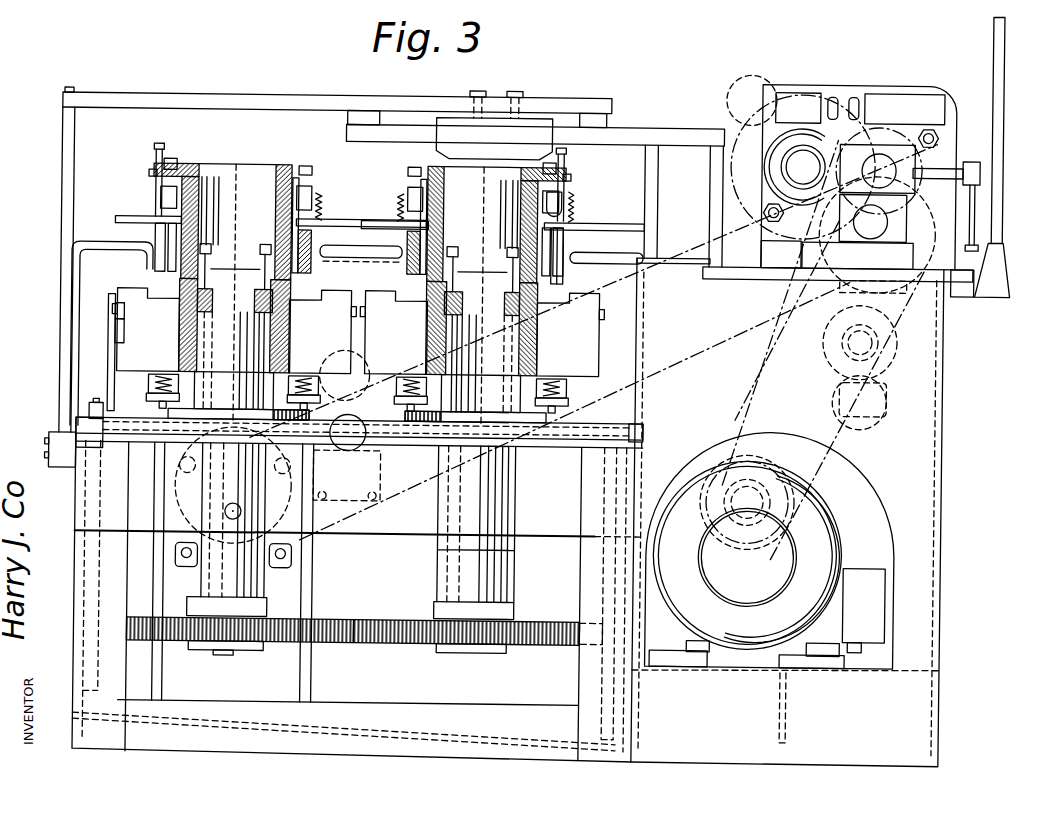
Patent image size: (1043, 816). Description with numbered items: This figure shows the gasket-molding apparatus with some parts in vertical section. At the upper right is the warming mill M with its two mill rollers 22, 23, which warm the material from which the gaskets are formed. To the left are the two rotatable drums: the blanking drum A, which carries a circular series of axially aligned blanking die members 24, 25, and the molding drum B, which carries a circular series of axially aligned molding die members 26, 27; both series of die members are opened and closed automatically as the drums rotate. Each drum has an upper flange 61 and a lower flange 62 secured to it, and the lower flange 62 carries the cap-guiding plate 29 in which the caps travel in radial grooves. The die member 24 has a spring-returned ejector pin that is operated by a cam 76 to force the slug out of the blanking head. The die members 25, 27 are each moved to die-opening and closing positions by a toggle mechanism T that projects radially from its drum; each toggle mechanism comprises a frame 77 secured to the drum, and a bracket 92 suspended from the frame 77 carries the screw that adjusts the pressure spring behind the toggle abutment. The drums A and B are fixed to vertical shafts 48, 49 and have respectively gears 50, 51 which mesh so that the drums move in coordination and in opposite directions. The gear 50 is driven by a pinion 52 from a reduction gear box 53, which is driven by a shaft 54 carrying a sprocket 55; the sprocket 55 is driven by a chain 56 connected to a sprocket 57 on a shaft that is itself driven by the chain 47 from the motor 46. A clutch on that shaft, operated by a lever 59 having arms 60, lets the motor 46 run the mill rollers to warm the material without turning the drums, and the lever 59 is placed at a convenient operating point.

The mill roller 22 is at (813, 122).
The mill roller 23 is at (881, 128).
The blanking die member 24 is at (572, 199).
The blanking die member 25 is at (566, 262).
The molding die member 26 is at (321, 201).
The molding die member 27 is at (308, 236).
The plate 29 is at (122, 214).
The motor 46 is at (811, 500).
The chain connections 47 is at (766, 358).
The vertical shaft 48 is at (250, 570).
The vertical shaft 49 is at (455, 570).
The gear 50 is at (180, 643).
The gear 51 is at (408, 645).
The pinion 52 is at (272, 654).
The reduction gear box 53 is at (298, 545).
The shaft 54 is at (237, 501).
The sprocket 55 is at (294, 461).
The chain 56 is at (694, 345).
The sprocket 57 is at (914, 160).
The lever 59 is at (1004, 104).
The arms 60 is at (799, 283).
The upper flange 61 is at (180, 166).
The lower flange 62 is at (403, 236).
The cam 76 is at (492, 150).
The toggle frame 77 is at (139, 356).
The bracket 92 is at (154, 393).
The blanking drum A is at (585, 170).
The molding drum B is at (137, 155).
The warming mill M is at (843, 132).
The toggle mechanism T is at (108, 287).